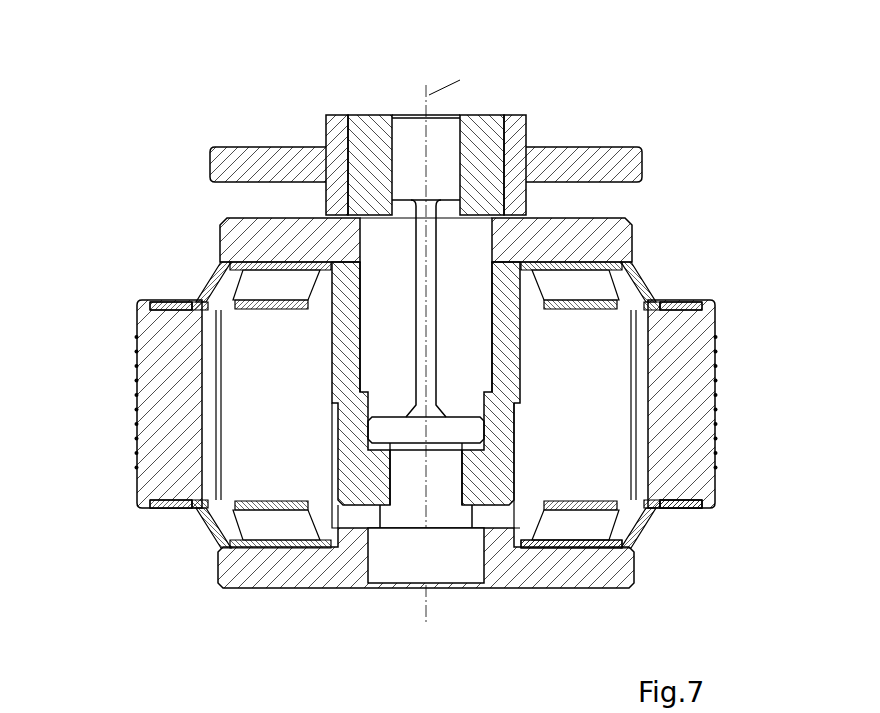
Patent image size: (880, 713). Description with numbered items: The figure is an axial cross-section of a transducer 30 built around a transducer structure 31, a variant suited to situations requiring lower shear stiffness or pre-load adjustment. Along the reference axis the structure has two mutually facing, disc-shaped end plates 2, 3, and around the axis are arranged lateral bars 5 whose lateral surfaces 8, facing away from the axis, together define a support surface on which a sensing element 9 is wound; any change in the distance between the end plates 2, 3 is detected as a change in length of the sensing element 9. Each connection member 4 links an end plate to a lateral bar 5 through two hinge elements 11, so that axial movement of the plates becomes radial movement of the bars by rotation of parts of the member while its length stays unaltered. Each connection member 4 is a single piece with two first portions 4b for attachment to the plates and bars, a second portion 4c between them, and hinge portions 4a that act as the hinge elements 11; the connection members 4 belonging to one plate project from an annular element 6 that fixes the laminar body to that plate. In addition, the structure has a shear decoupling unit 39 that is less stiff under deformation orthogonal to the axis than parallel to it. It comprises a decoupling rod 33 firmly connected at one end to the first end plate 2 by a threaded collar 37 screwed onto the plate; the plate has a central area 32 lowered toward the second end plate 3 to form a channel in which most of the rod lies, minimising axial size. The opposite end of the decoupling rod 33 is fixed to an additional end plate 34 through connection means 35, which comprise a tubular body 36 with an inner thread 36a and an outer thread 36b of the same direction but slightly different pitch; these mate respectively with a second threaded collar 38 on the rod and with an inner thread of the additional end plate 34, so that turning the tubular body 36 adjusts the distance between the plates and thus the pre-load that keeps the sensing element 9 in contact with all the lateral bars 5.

The transducer 30 is at (190, 85).
The first end plate 2 is at (610, 237).
The second end plate 3 is at (595, 573).
The connection member 4 is at (647, 283).
The hinge portion 4a is at (660, 512).
The first portion 4b is at (603, 535).
The second portion 4c is at (638, 528).
The lateral bar 5 is at (693, 320).
The annular element 6 is at (572, 543).
The lateral surface 8 is at (717, 327).
The sensing element 9 is at (717, 420).
The hinge element 11 is at (222, 263).
The transducer structure 31 is at (633, 215).
The central area 32 is at (372, 478).
The decoupling rod 33 is at (432, 265).
The additional end plate 34 is at (608, 160).
The connection means 35 is at (405, 98).
The tubular body 36 is at (477, 145).
The inner thread 36a is at (458, 176).
The outer thread 36b is at (343, 143).
The threaded collar 37 is at (407, 483).
The second threaded collar 38 is at (410, 178).
The shear decoupling unit 39 is at (405, 313).